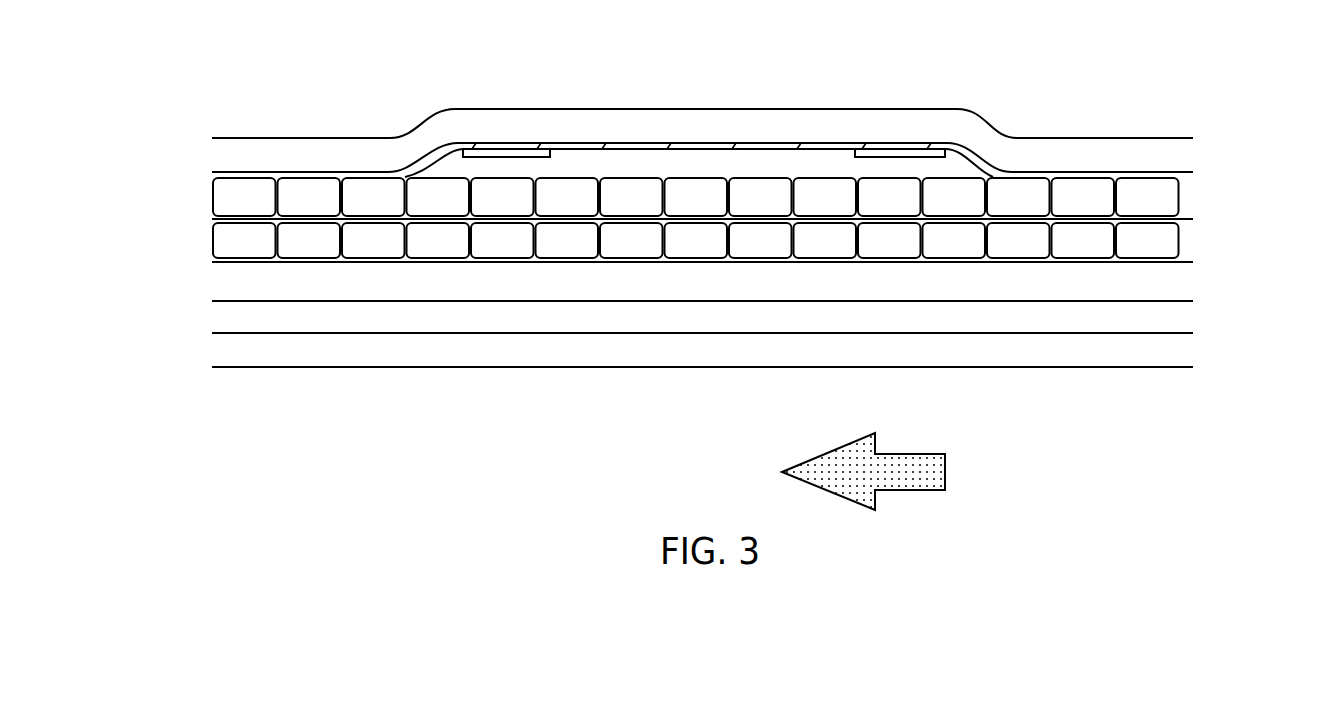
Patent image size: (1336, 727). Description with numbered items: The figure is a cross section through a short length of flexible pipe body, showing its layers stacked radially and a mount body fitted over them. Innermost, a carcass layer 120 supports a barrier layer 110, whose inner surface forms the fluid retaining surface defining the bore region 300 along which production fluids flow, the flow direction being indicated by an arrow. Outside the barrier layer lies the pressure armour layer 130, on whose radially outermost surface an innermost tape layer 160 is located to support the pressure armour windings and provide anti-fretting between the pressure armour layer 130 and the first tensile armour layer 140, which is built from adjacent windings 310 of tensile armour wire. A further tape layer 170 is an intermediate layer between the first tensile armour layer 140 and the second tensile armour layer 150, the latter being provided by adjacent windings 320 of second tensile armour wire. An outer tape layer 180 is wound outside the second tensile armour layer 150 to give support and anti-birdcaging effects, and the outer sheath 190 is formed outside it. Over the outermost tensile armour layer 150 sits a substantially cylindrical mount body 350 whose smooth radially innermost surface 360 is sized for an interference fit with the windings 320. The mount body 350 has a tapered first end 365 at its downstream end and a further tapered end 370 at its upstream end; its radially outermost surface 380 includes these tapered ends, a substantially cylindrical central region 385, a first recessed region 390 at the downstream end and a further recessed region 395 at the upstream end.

The bore region 300 is at (703, 481).
The barrier layer 110 is at (1187, 317).
The carcass layer 120 is at (1185, 355).
The pressure armour layer 130 is at (208, 284).
The first tensile armour layer 140 is at (206, 237).
The second tensile armour layer 150 is at (206, 200).
The innermost tape layer 160 is at (1209, 262).
The further tape layer 170 is at (1209, 219).
The outer tape layer 180 is at (1209, 173).
The outer sheath 190 is at (227, 158).
The windings of tensile armour wire 310 is at (256, 247).
The windings of second tensile armour wire 320 is at (1165, 107).
The mount body 350 is at (567, 163).
The radially innermost surface 360 is at (503, 192).
The tapered first end 365 is at (440, 167).
The further tapered end 370 is at (965, 168).
The radially outermost surface 380 is at (697, 150).
The substantially cylindrical central region 385 is at (635, 150).
The first recessed region 390 is at (507, 158).
The further recessed region 395 is at (890, 158).